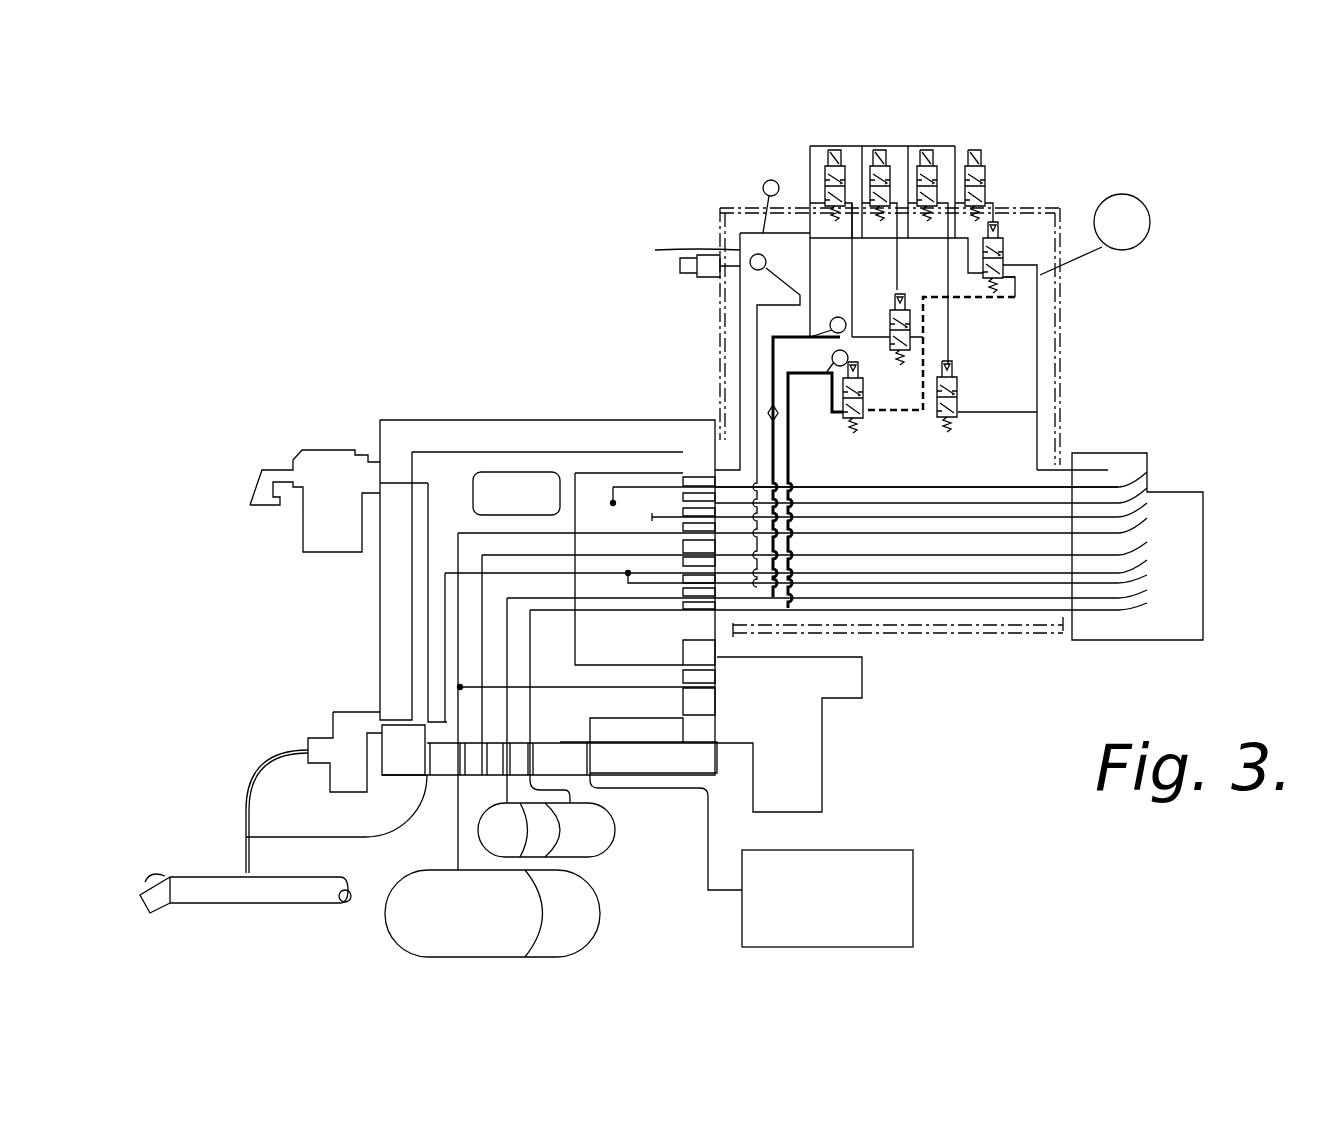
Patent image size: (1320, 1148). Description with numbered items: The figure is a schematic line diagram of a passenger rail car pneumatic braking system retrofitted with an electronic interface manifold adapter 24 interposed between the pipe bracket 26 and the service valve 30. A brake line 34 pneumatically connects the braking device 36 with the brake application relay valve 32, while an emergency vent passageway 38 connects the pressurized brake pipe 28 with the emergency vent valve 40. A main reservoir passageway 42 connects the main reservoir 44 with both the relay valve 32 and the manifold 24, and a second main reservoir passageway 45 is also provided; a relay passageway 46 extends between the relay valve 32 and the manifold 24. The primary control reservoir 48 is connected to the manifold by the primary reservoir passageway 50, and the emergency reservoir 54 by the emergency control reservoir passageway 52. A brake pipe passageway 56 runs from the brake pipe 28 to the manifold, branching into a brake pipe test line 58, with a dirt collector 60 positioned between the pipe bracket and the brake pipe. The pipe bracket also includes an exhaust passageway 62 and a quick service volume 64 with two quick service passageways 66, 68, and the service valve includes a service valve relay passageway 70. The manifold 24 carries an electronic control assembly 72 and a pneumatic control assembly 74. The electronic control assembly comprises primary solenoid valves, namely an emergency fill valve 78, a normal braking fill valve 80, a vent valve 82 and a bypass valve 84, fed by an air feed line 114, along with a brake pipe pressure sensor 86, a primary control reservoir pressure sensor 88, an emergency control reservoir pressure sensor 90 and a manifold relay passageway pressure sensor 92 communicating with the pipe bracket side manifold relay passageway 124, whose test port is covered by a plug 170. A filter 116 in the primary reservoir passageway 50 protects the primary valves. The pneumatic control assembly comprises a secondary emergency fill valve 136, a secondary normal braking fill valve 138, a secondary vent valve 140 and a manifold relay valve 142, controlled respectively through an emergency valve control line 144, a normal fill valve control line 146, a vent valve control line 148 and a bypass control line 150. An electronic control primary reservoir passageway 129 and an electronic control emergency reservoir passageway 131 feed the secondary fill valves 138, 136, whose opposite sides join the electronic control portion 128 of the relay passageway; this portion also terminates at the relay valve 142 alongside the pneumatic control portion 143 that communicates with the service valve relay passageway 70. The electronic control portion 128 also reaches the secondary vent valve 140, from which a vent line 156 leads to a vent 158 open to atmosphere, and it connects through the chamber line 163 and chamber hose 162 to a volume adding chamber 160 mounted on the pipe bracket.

The electronic interface manifold adapter 24 is at (720, 212).
The pipe bracket 26 is at (392, 440).
The brake pipe 28 is at (212, 895).
The service valve 30 is at (1135, 628).
The brake application relay valve 32 is at (800, 762).
The brake line 34 is at (653, 740).
The braking device 36 is at (913, 860).
The emergency vent passageway 38 is at (428, 590).
The emergency vent valve 40 is at (322, 478).
The main reservoir passageway 42 is at (458, 660).
The main reservoir 44 is at (540, 932).
The second main reservoir passageway 45 is at (1150, 477).
The relay passageway 46 is at (585, 460).
The primary control reservoir 48 is at (512, 868).
The primary reservoir passageway 50 is at (548, 592).
The emergency control reservoir passageway 52 is at (600, 610).
The emergency reservoir 54 is at (592, 842).
The brake pipe passageway 56 is at (445, 628).
The brake pipe test line 58 is at (1150, 555).
The dirt collector 60 is at (345, 738).
The exhaust passageway 62 is at (440, 778).
The quick service volume 64 is at (512, 492).
The quick service passageway 66 is at (625, 475).
The quick service passageway 68 is at (665, 487).
The service valve relay passageway 70 is at (1080, 468).
The electronic control assembly 72 is at (1014, 127).
The pneumatic control assembly 74 is at (1010, 318).
The emergency fill valve 78 is at (834, 152).
The normal braking fill valve 80 is at (879, 152).
The vent valve 82 is at (926, 152).
The bypass valve 84 is at (974, 152).
The brake pipe pressure sensor 86 is at (767, 262).
The primary control reservoir pressure sensor 88 is at (830, 330).
The emergency control reservoir pressure sensor 90 is at (836, 366).
The manifold relay passageway pressure sensor 92 is at (762, 188).
The air feed line 114 is at (810, 160).
The filter 116 is at (786, 418).
The pipe bracket side manifold relay passageway 124 is at (677, 249).
The electronic control portion 128 is at (965, 300).
The electronic control primary reservoir passageway 129 is at (771, 382).
The electronic control emergency reservoir passageway 131 is at (792, 462).
The secondary emergency fill valve 136 is at (860, 420).
The secondary normal braking fill valve 138 is at (893, 310).
The secondary vent valve 140 is at (950, 420).
The manifold relay valve 142 is at (1002, 248).
The pneumatic control portion 143 is at (1040, 302).
The emergency valve control line 144 is at (852, 303).
The normal fill valve control line 146 is at (897, 252).
The vent valve control line 148 is at (948, 282).
The bypass control line 150 is at (995, 222).
The vent line 156 is at (995, 412).
The vent 158 is at (1040, 410).
The volume adding chamber 160 is at (1137, 230).
The chamber hose 162 is at (1085, 257).
The chamber line 163 is at (1040, 278).
The plug 170 is at (683, 274).